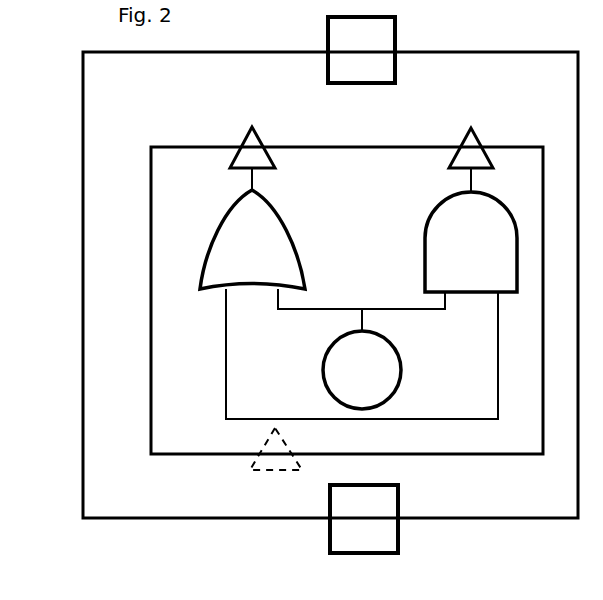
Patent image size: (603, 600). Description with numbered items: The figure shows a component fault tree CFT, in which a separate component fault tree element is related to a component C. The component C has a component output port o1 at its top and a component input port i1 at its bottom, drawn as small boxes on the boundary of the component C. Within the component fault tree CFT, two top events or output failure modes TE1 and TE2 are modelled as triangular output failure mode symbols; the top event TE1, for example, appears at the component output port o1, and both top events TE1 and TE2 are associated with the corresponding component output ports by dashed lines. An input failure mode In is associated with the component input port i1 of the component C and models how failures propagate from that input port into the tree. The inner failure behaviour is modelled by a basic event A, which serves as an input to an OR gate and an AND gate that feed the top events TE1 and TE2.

The component C is at (330, 285).
The component fault tree CFT is at (347, 300).
The component output port o1 is at (361, 50).
The component input port i1 is at (364, 519).
The top event TE1 is at (328, 70).
The top event TE2 is at (395, 70).
The basic event A is at (362, 370).
The input failure mode In is at (353, 483).